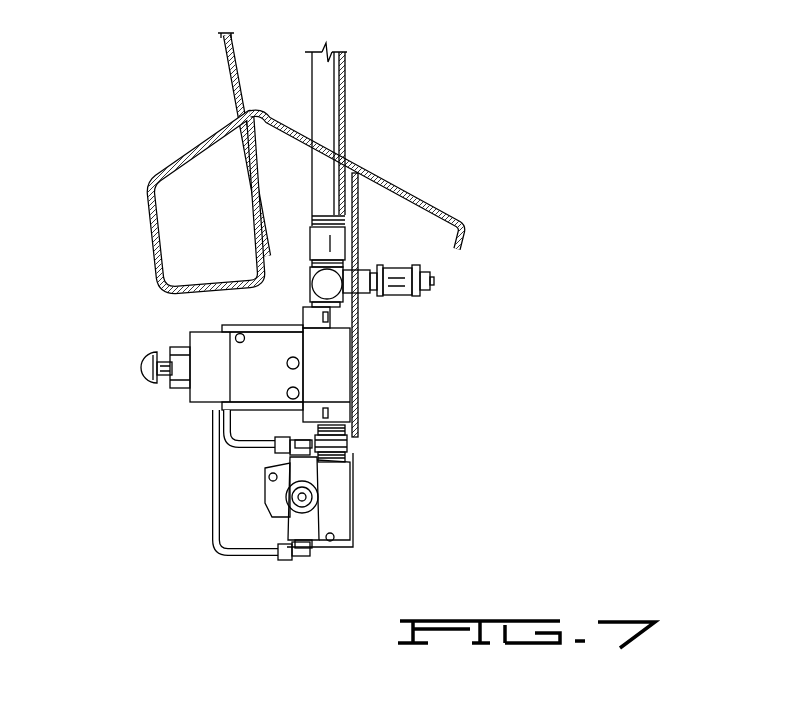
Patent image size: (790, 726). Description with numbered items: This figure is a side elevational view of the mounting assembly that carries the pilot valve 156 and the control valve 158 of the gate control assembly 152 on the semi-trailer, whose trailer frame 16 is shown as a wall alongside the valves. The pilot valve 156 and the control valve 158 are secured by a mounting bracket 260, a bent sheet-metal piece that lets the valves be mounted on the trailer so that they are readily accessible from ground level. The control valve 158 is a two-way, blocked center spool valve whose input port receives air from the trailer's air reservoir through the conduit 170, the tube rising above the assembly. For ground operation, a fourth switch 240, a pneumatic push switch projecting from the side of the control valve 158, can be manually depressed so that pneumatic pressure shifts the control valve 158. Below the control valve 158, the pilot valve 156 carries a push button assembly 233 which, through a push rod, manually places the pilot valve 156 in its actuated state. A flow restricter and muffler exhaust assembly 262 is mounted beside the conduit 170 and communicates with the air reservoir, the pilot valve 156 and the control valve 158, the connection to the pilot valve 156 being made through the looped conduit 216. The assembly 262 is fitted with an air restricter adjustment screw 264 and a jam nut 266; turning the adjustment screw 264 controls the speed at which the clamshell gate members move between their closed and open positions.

The trailer frame 16 is at (237, 57).
The conduit 170 is at (333, 82).
The mounting bracket 260 is at (408, 186).
The jam nut 266 is at (424, 270).
The air restricter adjustment screw 264 is at (430, 281).
The flow restricter and muffler exhaust assembly 262 is at (396, 299).
The fourth switch 240 is at (147, 355).
The control valve 158 is at (185, 403).
The conduit 216 is at (213, 427).
The gate control assembly 152 is at (183, 500).
The push button assembly 233 is at (313, 493).
The pilot valve 156 is at (322, 547).